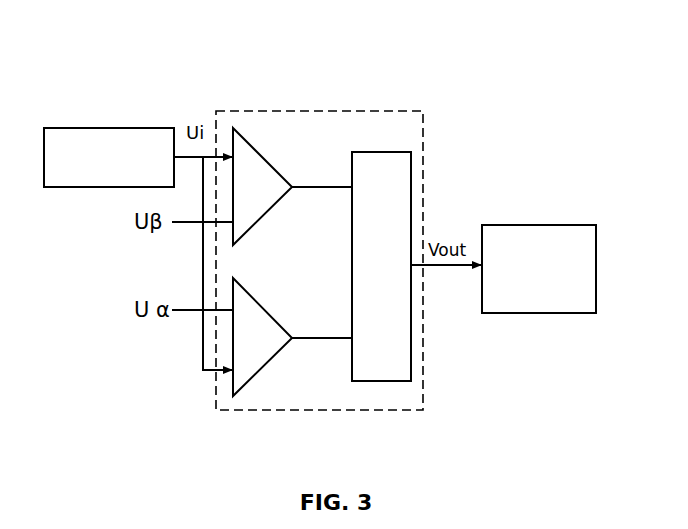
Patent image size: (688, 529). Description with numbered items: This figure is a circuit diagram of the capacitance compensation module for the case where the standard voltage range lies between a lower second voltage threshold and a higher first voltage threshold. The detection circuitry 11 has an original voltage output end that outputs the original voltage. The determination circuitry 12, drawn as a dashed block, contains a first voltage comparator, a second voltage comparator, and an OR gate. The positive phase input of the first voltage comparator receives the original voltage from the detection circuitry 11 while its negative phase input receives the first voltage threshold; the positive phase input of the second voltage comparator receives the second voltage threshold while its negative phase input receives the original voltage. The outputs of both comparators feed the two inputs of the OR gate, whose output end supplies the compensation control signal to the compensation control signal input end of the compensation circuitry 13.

The detection circuitry 11 is at (163, 98).
The determination circuitry 12 is at (393, 77).
The compensation circuitry 13 is at (510, 225).